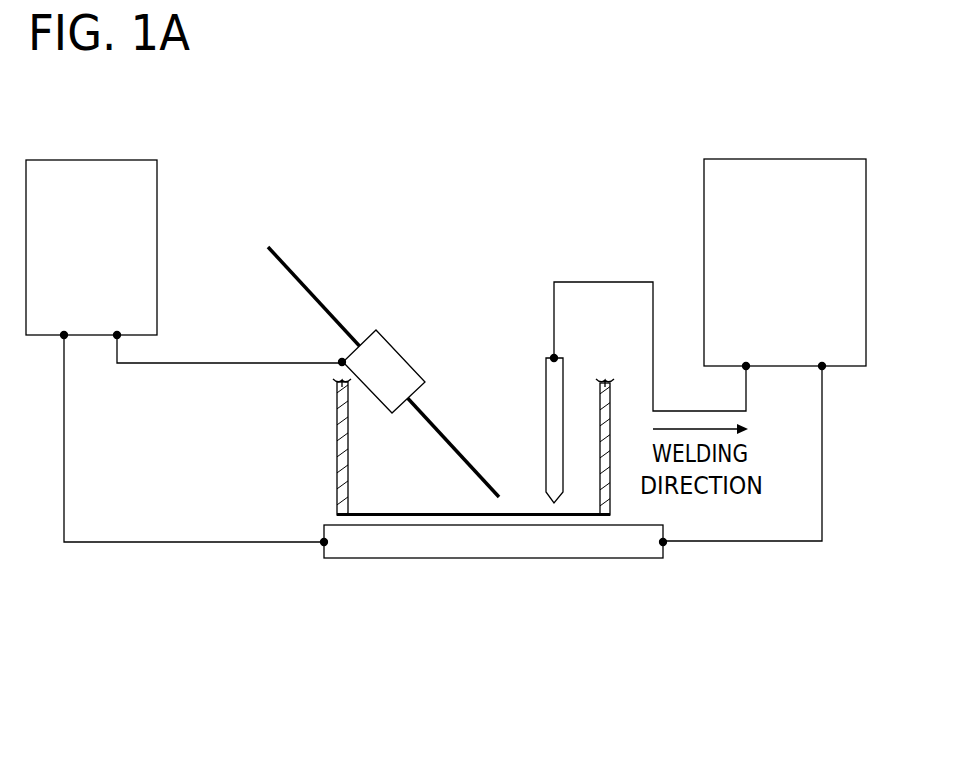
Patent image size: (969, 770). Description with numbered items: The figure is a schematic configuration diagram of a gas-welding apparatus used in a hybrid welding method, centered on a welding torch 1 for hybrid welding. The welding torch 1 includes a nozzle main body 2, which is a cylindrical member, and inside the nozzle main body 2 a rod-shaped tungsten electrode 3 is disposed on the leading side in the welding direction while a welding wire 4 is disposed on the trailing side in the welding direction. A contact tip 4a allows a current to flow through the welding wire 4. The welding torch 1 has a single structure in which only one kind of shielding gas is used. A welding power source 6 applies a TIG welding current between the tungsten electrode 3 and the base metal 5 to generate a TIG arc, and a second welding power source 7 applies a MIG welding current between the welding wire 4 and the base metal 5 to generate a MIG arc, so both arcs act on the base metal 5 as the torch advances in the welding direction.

The welding torch 1 is at (529, 282).
The nozzle main body 2 is at (338, 445).
The tungsten electrode 3 is at (563, 377).
The welding wire 4 is at (458, 445).
The contact tip 4a is at (402, 358).
The base metal 5 is at (493, 550).
The welding power source 6 is at (784, 167).
The welding power source 7 is at (91, 163).